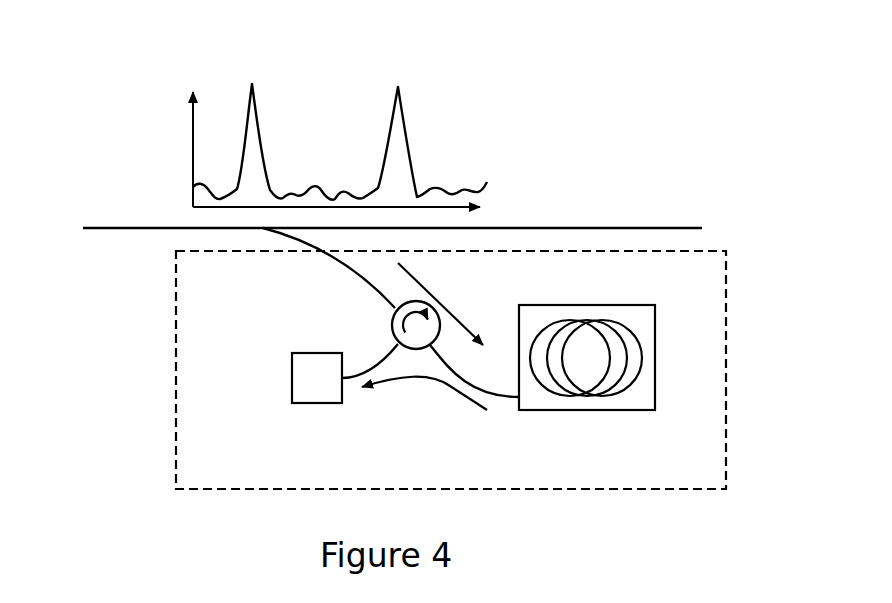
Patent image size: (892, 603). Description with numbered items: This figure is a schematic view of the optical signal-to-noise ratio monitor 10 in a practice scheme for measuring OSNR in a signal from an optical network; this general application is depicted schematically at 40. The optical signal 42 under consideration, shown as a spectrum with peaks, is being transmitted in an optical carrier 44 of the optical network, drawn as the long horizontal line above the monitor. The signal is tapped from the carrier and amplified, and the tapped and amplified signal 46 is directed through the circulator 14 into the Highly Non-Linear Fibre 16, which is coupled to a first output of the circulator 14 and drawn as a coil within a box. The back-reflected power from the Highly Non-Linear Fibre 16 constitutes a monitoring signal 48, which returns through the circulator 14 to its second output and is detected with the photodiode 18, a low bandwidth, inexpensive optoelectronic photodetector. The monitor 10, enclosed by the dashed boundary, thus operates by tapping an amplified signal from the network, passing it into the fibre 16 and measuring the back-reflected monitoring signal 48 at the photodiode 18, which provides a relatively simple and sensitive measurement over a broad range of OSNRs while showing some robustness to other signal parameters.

The general application 40 is at (112, 44).
The optical signal 42 is at (441, 118).
The optical carrier 44 is at (137, 228).
The optical signal-to-noise ratio monitor 10 is at (228, 470).
The circulator 14 is at (391, 318).
The photodiode 18 is at (292, 367).
The Highly Non-Linear Fibre 16 is at (655, 424).
The tapped and amplified signal 46 is at (452, 310).
The monitoring signal 48 is at (423, 376).